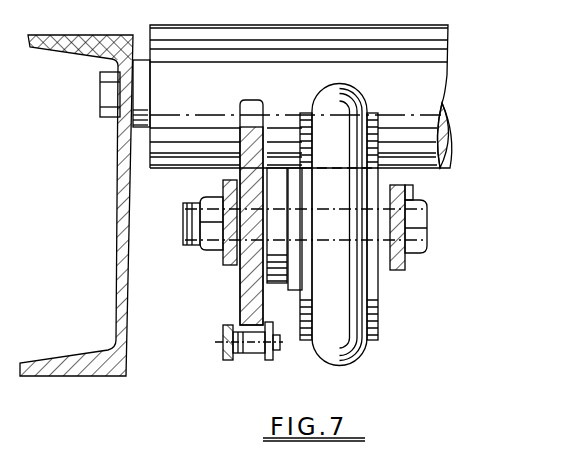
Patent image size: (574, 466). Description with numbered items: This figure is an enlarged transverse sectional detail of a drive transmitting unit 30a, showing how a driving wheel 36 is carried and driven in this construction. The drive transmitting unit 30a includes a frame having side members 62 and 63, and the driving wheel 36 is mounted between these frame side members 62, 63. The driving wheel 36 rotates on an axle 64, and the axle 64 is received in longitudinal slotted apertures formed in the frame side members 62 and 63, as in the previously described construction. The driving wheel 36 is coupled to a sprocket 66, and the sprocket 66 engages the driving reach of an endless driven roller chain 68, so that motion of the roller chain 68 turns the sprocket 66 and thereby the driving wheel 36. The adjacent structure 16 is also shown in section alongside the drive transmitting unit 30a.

The track beam 16 is at (445, 87).
The drive transmitting unit 30a is at (432, 198).
The driving wheel 36 is at (358, 347).
The frame side member 62 is at (403, 263).
The frame side member 63 is at (232, 258).
The axle 64 is at (426, 232).
The sprocket 66 is at (240, 300).
The endless driven roller chain 68 is at (222, 347).